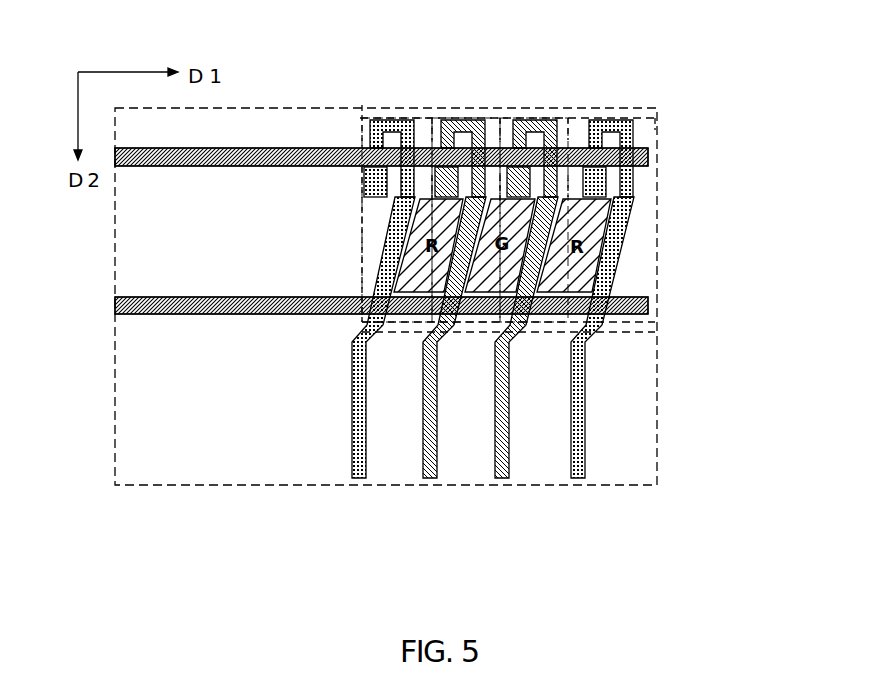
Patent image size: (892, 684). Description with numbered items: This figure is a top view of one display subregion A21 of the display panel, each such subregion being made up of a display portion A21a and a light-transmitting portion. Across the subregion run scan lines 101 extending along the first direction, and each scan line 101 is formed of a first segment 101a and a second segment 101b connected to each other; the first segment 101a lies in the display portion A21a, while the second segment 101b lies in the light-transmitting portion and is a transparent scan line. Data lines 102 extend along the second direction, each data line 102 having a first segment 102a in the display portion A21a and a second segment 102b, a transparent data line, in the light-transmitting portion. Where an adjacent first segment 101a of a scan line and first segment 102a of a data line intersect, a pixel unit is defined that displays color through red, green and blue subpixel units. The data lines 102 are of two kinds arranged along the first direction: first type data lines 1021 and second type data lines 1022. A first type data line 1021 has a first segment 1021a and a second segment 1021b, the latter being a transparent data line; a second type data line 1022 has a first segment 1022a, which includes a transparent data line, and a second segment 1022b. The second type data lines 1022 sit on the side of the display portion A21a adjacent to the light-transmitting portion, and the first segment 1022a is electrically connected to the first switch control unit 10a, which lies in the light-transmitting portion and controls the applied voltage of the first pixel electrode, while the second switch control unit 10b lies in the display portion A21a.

The display subregion A21 is at (589, 56).
The display portion A21a is at (462, 108).
The first switch control unit 10a is at (390, 108).
The second switch control unit 10b is at (532, 108).
The scan line 101 is at (431, 267).
The first segment of the scan line 101a is at (648, 157).
The second segment of the scan line 101b is at (290, 167).
The data line 102 is at (576, 391).
The first type data line 1021 is at (430, 485).
The second type data line 1022 is at (420, 546).
The first segment of the data line 102a is at (588, 261).
The second segment of the data line 102b is at (581, 401).
The first segment of the first type data line 1021a is at (537, 230).
The first segment of the second type data line 1022a is at (613, 267).
The second segment of the first type data line 1021b is at (510, 408).
The second segment of the second type data line 1022b is at (583, 442).